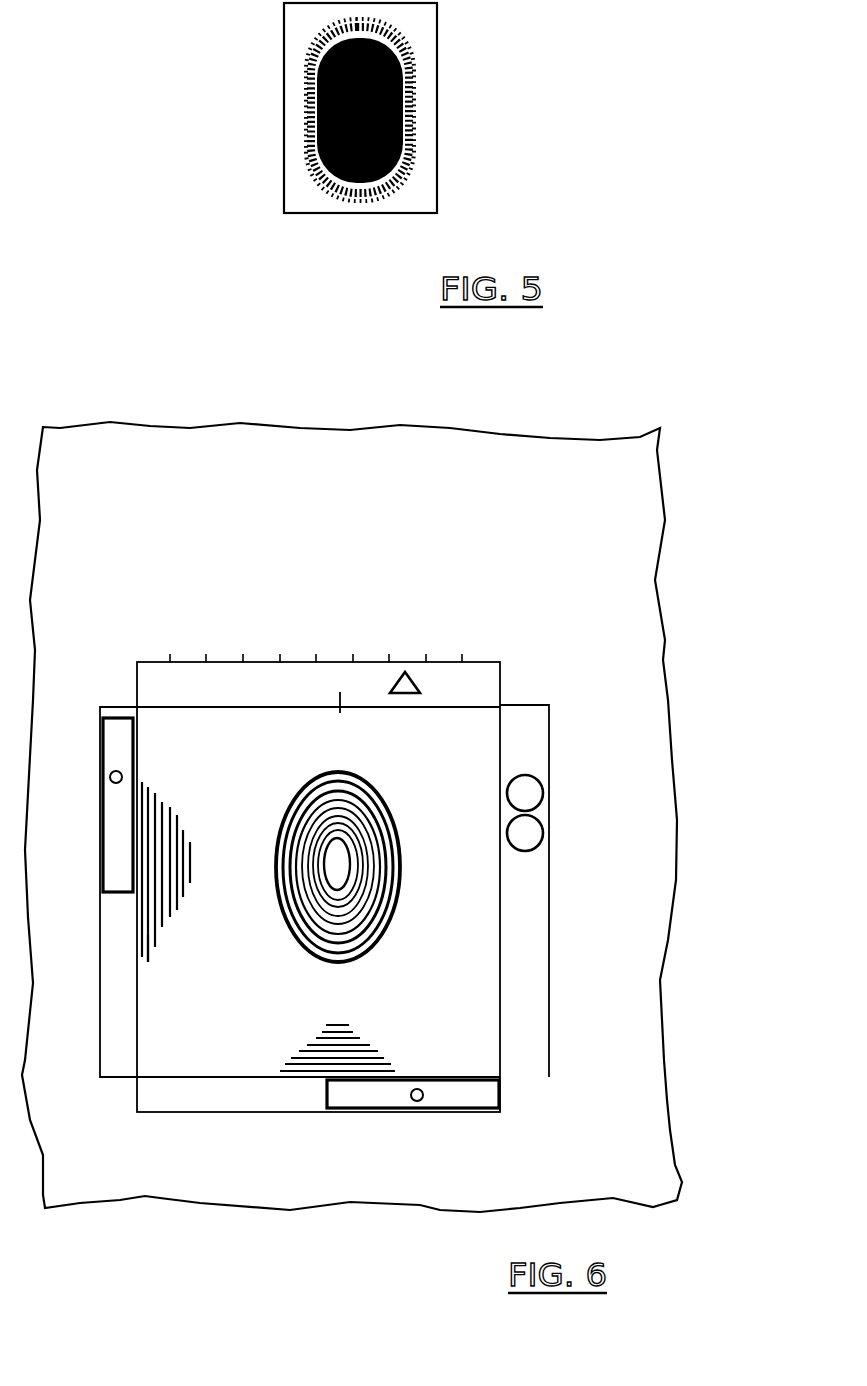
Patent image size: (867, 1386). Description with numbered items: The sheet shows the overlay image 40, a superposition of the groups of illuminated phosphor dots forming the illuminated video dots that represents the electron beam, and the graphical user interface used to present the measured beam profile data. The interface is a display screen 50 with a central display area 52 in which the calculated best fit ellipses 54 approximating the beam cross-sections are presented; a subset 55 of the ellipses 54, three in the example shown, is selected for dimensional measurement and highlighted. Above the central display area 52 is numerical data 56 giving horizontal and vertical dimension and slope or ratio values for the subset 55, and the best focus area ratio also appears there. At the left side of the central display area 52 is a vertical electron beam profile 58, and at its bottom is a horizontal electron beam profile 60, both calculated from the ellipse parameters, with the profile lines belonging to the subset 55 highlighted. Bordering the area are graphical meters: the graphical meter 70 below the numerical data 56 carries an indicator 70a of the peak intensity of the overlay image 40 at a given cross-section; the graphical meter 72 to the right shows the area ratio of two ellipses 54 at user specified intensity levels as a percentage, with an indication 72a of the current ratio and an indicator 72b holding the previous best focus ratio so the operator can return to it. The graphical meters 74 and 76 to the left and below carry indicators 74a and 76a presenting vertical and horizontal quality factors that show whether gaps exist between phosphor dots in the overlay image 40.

In FIG. 5, the overlay image 40 is at (418, 185).
In FIG. 6, the overlay image 40 is at (412, 806).
In FIG. 6, the display screen 50 is at (690, 478).
In FIG. 6, the central display area 52 is at (188, 1060).
In FIG. 6, the ellipses 54 is at (300, 806).
In FIG. 6, the subset of best fit ellipses 55 is at (150, 953).
In FIG. 6, the numerical data 56 is at (388, 534).
In FIG. 6, the vertical electron beam profile 58 is at (170, 780).
In FIG. 6, the horizontal electron beam profile 60 is at (277, 1034).
In FIG. 6, the graphical meter 70 is at (300, 721).
In FIG. 6, the indicator 70a is at (420, 684).
In FIG. 6, the graphical meter 72 is at (551, 935).
In FIG. 6, the indication 72a is at (545, 832).
In FIG. 6, the indicator 72b is at (513, 615).
In FIG. 6, the graphical meter 74 is at (108, 927).
In FIG. 6, the indicator 74a is at (111, 783).
In FIG. 6, the graphical meter 76 is at (260, 1097).
In FIG. 6, the indicator 76a is at (420, 1103).